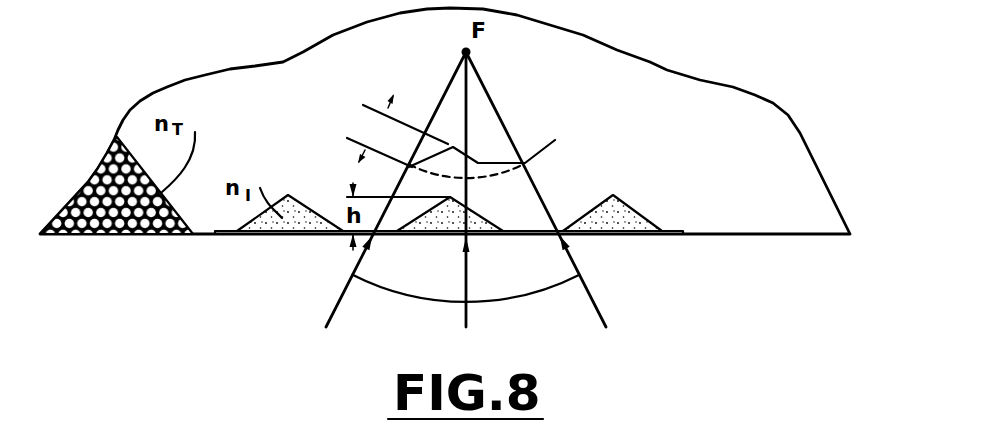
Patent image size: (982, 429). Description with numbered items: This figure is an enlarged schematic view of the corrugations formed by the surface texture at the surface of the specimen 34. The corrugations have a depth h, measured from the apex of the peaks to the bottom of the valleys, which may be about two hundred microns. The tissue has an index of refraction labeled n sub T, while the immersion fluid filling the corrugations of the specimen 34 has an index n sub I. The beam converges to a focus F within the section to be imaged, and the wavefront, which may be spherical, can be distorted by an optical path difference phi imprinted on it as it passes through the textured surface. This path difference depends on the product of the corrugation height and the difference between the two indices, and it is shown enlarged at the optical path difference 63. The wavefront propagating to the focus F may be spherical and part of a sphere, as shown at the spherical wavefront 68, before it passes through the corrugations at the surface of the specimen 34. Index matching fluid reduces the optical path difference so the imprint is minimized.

The specimen 34 is at (763, 116).
The optical path difference 63 is at (470, 157).
The spherical wavefront 68 is at (466, 189).